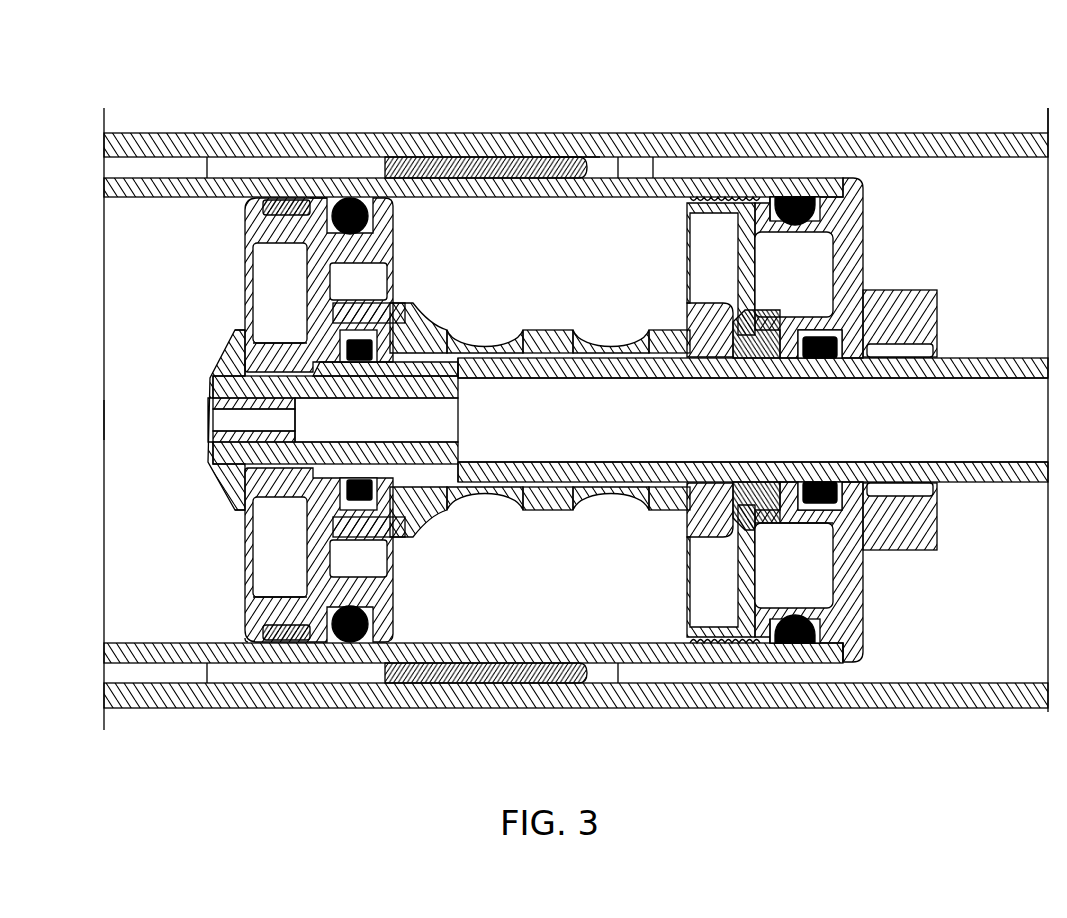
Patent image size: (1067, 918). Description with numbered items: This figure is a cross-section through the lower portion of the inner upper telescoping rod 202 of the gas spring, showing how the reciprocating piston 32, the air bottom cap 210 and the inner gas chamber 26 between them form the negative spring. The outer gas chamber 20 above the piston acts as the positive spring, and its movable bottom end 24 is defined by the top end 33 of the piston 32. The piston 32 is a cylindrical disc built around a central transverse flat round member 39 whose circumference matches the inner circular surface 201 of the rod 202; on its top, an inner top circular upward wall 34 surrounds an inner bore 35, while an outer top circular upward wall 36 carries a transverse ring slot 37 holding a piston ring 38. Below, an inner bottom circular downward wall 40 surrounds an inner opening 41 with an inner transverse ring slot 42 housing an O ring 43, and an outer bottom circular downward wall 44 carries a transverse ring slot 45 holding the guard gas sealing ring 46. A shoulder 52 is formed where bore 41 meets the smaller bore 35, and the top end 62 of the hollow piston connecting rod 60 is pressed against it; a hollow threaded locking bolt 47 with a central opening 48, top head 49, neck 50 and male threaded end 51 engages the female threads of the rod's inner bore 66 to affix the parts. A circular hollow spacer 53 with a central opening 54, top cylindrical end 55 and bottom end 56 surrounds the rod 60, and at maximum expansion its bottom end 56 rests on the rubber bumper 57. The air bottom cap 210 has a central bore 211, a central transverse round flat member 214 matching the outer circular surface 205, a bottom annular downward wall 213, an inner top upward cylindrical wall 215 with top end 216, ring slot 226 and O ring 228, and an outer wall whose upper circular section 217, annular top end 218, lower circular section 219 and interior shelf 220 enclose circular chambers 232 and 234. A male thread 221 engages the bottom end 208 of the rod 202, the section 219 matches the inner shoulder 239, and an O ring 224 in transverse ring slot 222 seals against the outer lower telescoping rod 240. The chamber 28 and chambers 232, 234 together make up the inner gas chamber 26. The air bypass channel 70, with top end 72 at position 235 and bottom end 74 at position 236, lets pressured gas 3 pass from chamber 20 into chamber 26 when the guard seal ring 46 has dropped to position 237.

The pressured gas 3 is at (828, 427).
The outer gas chamber 20 is at (156, 433).
The movable bottom end 24 is at (222, 298).
The inner gas chamber 26 is at (608, 602).
The chamber 28 is at (622, 321).
The reciprocating piston 32 is at (194, 574).
The top end of the piston 33 is at (248, 230).
The inner top circular upward wall 34 is at (270, 353).
The inner bore 35 is at (260, 345).
The outer top circular upward wall 36 is at (266, 198).
The transverse ring slot 37 is at (257, 644).
The piston ring 38 is at (280, 642).
The central transverse flat round member 39 is at (322, 197).
The inner bottom circular downward wall 40 is at (340, 497).
The inner opening 41 is at (330, 488).
The inner transverse ring slot 42 is at (350, 333).
The O ring 43 is at (378, 330).
The outer bottom circular downward wall 44 is at (378, 642).
The transverse ring slot 45 is at (367, 636).
The guard gas sealing ring 46 is at (390, 605).
The hollow threaded locking bolt 47 is at (203, 387).
The central opening 48 is at (386, 433).
The top head 49 is at (248, 372).
The neck 50 is at (238, 335).
The male threaded end 51 is at (350, 378).
The shoulder 52 is at (262, 485).
The circular hollow spacer 53 is at (547, 322).
The central opening 54 is at (610, 510).
The top cylindrical end 55 is at (395, 530).
The bottom end 56 is at (703, 530).
The rubber bumper 57 is at (775, 525).
The piston connecting rod 60 is at (1011, 349).
The top end 62 is at (412, 330).
The inner bore 66 is at (636, 433).
The air bypass channel 70 is at (420, 195).
The top end 72 is at (232, 178).
The bottom end 74 is at (562, 157).
The inner circular surface 201 is at (603, 178).
The inner upper telescoping rod 202 is at (527, 638).
The outer circular surface 205 is at (657, 178).
The bottom end 208 is at (843, 185).
The air bottom cap 210 is at (945, 555).
The central bore 211 is at (845, 492).
The bottom annular downward wall 213 is at (912, 513).
The central transverse round flat member 214 is at (850, 655).
The inner top upward cylindrical wall 215 is at (820, 553).
The top end 216 is at (797, 508).
The upper circular section 217 is at (760, 645).
The annular top end 218 is at (700, 645).
The lower circular section 219 is at (826, 645).
The interior shelf 220 is at (768, 640).
The male thread 221 is at (707, 643).
The transverse ring slot 222 is at (800, 200).
The O ring 224 is at (750, 197).
The ring slot 226 is at (830, 335).
The O ring 228 is at (870, 340).
The circular chamber 232 is at (704, 285).
The circular chamber 234 is at (819, 297).
The position 235 is at (250, 198).
The position 236 is at (546, 184).
The position 237 is at (352, 190).
The inner shoulder 239 is at (778, 197).
The outer lower telescoping rod 240 is at (978, 111).